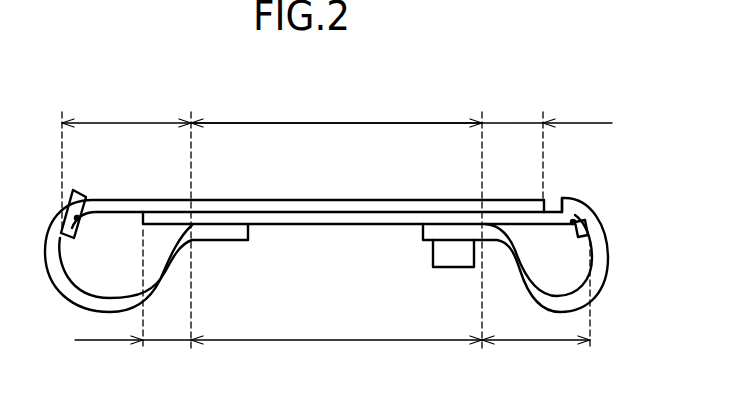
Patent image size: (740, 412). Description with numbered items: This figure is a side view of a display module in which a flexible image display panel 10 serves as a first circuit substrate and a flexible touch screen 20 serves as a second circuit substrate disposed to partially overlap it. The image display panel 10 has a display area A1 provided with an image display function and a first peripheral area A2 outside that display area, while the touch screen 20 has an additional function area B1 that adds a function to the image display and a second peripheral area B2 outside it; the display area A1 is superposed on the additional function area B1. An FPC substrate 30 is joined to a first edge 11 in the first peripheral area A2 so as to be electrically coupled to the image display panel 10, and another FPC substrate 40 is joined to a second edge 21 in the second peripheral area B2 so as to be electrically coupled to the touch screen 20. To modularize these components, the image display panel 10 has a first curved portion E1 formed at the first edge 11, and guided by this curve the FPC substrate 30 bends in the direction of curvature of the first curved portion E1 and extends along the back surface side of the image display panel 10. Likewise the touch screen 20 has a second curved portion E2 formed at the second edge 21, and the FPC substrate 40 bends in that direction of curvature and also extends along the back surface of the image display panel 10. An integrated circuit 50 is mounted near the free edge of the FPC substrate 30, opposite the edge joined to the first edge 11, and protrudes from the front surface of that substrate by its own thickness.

The image display panel 10 is at (303, 220).
The touch screen 20 is at (273, 207).
The FPC substrate 30 is at (605, 256).
The FPC substrate 40 is at (63, 290).
The integrated circuit 50 is at (461, 256).
The first edge 11 is at (583, 216).
The second edge 21 is at (80, 236).
The first curved portion E1 is at (573, 224).
The second curved portion E2 is at (77, 217).
The display area A1 is at (336, 355).
The first peripheral area A2 is at (332, 355).
The additional function area B1 is at (336, 109).
The second peripheral area B2 is at (337, 109).